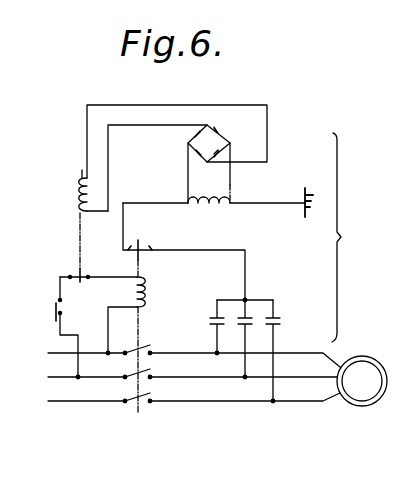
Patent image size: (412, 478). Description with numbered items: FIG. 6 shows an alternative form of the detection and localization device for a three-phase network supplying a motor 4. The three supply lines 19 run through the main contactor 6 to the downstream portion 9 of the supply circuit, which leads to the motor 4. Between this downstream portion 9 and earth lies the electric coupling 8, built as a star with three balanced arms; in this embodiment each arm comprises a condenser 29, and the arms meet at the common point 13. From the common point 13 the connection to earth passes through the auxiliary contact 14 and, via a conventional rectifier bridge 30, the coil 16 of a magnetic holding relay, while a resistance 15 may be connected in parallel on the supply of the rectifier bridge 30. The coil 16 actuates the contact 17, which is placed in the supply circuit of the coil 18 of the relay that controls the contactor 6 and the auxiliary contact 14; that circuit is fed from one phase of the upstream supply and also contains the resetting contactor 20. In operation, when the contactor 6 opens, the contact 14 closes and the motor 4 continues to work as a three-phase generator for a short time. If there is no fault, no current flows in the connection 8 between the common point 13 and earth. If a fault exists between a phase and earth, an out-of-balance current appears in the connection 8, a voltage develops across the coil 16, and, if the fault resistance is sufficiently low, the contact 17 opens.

The motor 4 is at (361, 388).
The contactor 6 is at (141, 354).
The electric coupling 8 is at (346, 237).
The downstream portion of the supply circuit 9 is at (210, 392).
The common point 13 is at (255, 299).
The auxiliary contact 14 is at (140, 240).
The variable resistance 15 is at (211, 200).
The coil of magnetic holding relay 16 is at (76, 193).
The contactor 17 is at (85, 271).
The coil 18 is at (142, 291).
The supply lines 19 is at (98, 400).
The resetting contactor 20 is at (54, 309).
The condenser 29 is at (222, 329).
The rectifier bridge 30 is at (222, 138).